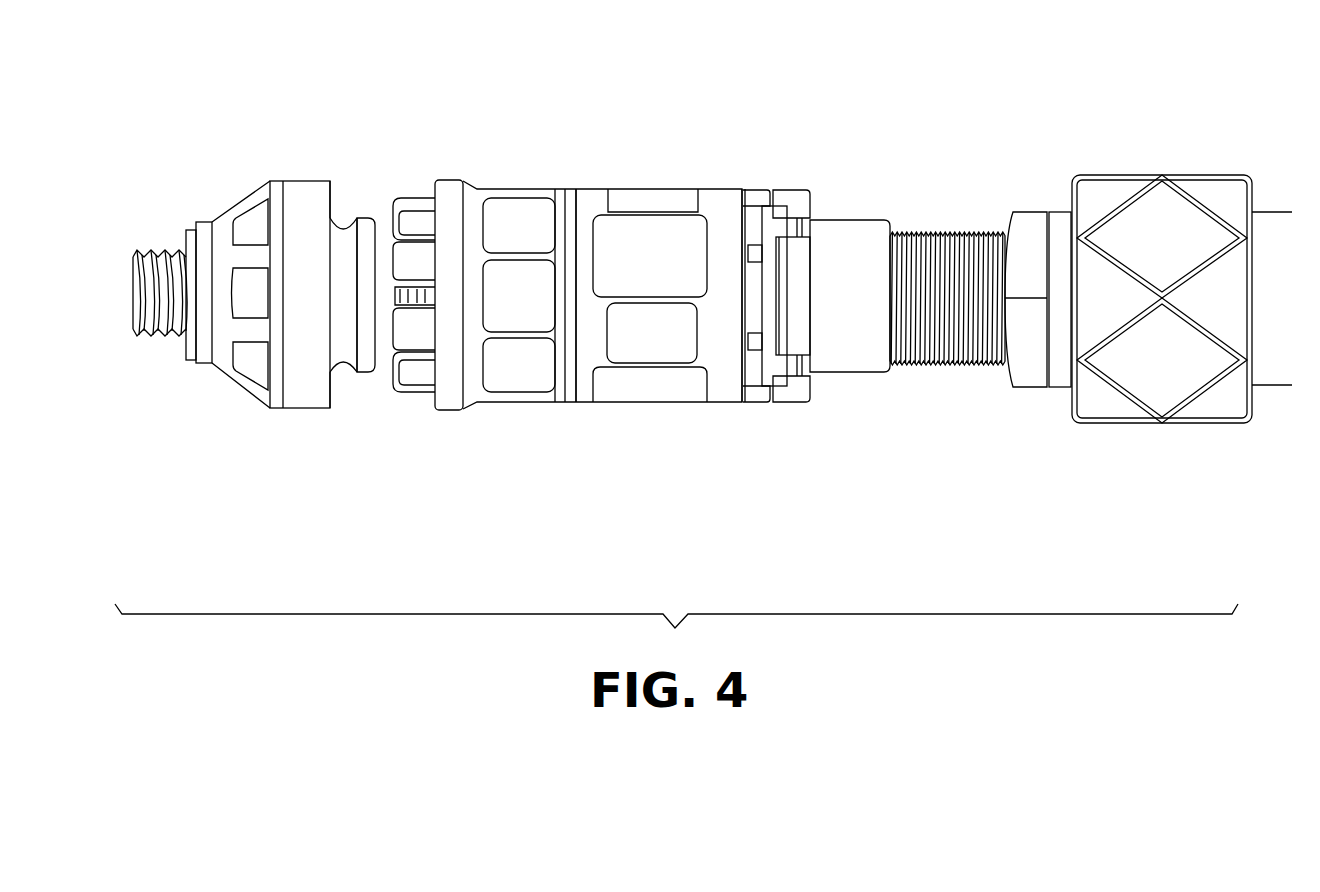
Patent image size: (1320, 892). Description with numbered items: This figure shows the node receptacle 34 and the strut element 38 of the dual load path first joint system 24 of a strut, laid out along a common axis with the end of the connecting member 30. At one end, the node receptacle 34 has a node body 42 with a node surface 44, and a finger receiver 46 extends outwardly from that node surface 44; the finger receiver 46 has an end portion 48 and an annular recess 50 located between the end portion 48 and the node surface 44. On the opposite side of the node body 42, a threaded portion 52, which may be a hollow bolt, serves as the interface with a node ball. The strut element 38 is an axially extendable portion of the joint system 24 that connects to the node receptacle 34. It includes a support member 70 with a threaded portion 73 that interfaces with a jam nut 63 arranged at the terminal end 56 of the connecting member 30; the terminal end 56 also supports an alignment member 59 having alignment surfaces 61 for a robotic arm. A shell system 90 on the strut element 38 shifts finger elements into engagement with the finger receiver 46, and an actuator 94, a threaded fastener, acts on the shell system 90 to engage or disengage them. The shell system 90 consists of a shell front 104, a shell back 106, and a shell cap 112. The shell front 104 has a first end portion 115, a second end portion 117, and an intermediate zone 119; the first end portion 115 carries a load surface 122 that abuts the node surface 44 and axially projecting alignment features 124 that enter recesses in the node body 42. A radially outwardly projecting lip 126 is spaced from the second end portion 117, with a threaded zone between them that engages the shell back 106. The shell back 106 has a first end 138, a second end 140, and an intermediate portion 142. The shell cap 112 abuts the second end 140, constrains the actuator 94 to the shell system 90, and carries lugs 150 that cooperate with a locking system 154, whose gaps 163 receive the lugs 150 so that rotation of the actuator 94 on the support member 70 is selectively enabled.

The dual load path first joint system 24 is at (845, 490).
The connecting member 30 is at (1280, 387).
The node receptacle 34 is at (285, 418).
The strut element 38 is at (504, 458).
The node body 42 is at (243, 388).
The node surface 44 is at (330, 398).
The finger receiver 46 is at (362, 388).
The end portion 48 is at (367, 226).
The annular recess 50 is at (345, 222).
The threaded portion 52 is at (163, 340).
The terminal end 56 is at (1056, 465).
The alignment member 59 is at (1106, 418).
The alignment surfaces 61 is at (1162, 212).
The jam nut 63 is at (1030, 222).
The support member 70 is at (935, 372).
The threaded portion 73 is at (943, 230).
The shell system 90 is at (725, 430).
The actuator 94 is at (840, 360).
The shell front 104 is at (517, 188).
The shell back 106 is at (652, 192).
The shell cap 112 is at (756, 222).
The first end portion 115 is at (447, 180).
The second end portion 117 is at (552, 225).
The intermediate zone 119 is at (520, 380).
The load surface 122 is at (430, 403).
The axially outwardly projecting alignment feature 124 is at (393, 392).
The radially outwardly projecting lip 126 is at (560, 396).
The first end 138 is at (576, 197).
The second end 140 is at (721, 195).
The intermediate portion 142 is at (655, 394).
The lug 150 is at (768, 396).
The locking system 154 is at (806, 182).
The gaps 163 is at (815, 222).